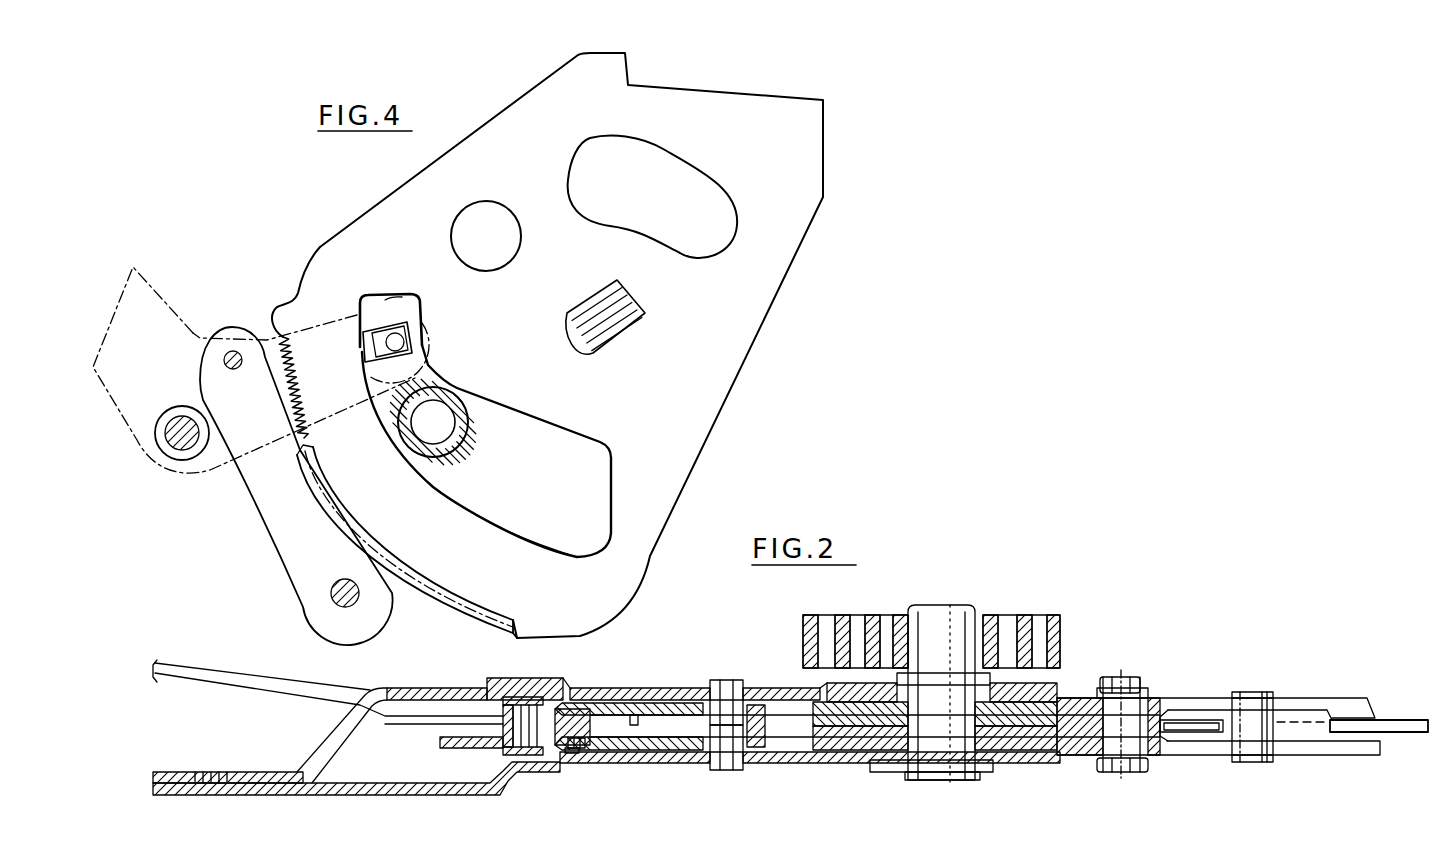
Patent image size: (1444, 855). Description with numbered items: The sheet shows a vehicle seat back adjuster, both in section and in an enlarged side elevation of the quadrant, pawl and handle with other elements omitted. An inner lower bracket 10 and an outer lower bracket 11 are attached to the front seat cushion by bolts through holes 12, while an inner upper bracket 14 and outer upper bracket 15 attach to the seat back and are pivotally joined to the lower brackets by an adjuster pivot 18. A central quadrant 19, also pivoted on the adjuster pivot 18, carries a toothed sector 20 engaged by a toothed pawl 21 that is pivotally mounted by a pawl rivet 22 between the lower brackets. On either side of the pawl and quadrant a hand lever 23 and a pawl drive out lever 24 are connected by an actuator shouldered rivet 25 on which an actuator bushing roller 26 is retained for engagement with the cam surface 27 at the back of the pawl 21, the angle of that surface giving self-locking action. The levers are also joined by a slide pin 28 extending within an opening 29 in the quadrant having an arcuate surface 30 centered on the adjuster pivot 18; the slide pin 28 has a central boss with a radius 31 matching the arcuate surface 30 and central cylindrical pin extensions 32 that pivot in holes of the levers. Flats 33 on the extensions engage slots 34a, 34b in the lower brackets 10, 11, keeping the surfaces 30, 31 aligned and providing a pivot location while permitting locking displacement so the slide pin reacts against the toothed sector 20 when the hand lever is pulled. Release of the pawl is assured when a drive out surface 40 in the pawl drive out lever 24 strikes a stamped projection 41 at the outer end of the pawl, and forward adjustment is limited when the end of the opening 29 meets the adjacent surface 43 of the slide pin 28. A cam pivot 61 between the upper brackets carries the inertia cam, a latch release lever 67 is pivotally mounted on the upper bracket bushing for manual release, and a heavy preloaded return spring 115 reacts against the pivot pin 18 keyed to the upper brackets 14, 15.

In FIG. 2, the inner lower bracket 10 is at (377, 790).
In FIG. 2, the outer lower bracket 11 is at (330, 745).
In FIG. 2, the holes 12 is at (245, 778).
In FIG. 2, the inner upper bracket 14 is at (1060, 743).
In FIG. 2, the outer upper bracket 15 is at (1073, 703).
In FIG. 2, the adjuster pivot 18 is at (940, 750).
In FIG. 4, the central quadrant 19 is at (752, 318).
In FIG. 2, the central quadrant 19 is at (667, 717).
In FIG. 4, the toothed sector 20 is at (478, 622).
In FIG. 2, the toothed sector 20 is at (636, 716).
In FIG. 4, the toothed pawl 21 is at (283, 553).
In FIG. 2, the toothed pawl 21 is at (610, 717).
In FIG. 4, the pawl rivet 22 is at (333, 602).
In FIG. 2, the hand lever 23 is at (280, 690).
In FIG. 2, the pawl drive out lever 24 is at (443, 740).
In FIG. 2, the actuator shouldered rivet 25 is at (515, 720).
In FIG. 4, the actuator bushing roller 26 is at (181, 406).
In FIG. 2, the actuator bushing roller 26 is at (490, 727).
In FIG. 4, the cam surface 27 is at (200, 377).
In FIG. 4, the slide pin 28 is at (393, 342).
In FIG. 2, the slide pin 28 is at (728, 770).
In FIG. 4, the opening 29 is at (571, 504).
In FIG. 2, the opening 29 is at (798, 726).
In FIG. 4, the arcuate surface 30 is at (513, 540).
In FIG. 4, the radius 31 is at (362, 343).
In FIG. 4, the central cylindrical pin extensions 32 is at (367, 347).
In FIG. 4, the flats 33 is at (397, 313).
In FIG. 2, the slot 34a is at (710, 766).
In FIG. 2, the slot 34b is at (707, 687).
In FIG. 2, the drive out surface 40 is at (583, 748).
In FIG. 4, the stamped projection 41 is at (234, 351).
In FIG. 2, the stamped projection 41 is at (572, 753).
In FIG. 4, the adjacent surface 43 is at (370, 330).
In FIG. 2, the cam pivot 61 is at (1125, 763).
In FIG. 2, the latch release lever 67 is at (1408, 727).
In FIG. 2, the return spring 115 is at (1037, 611).